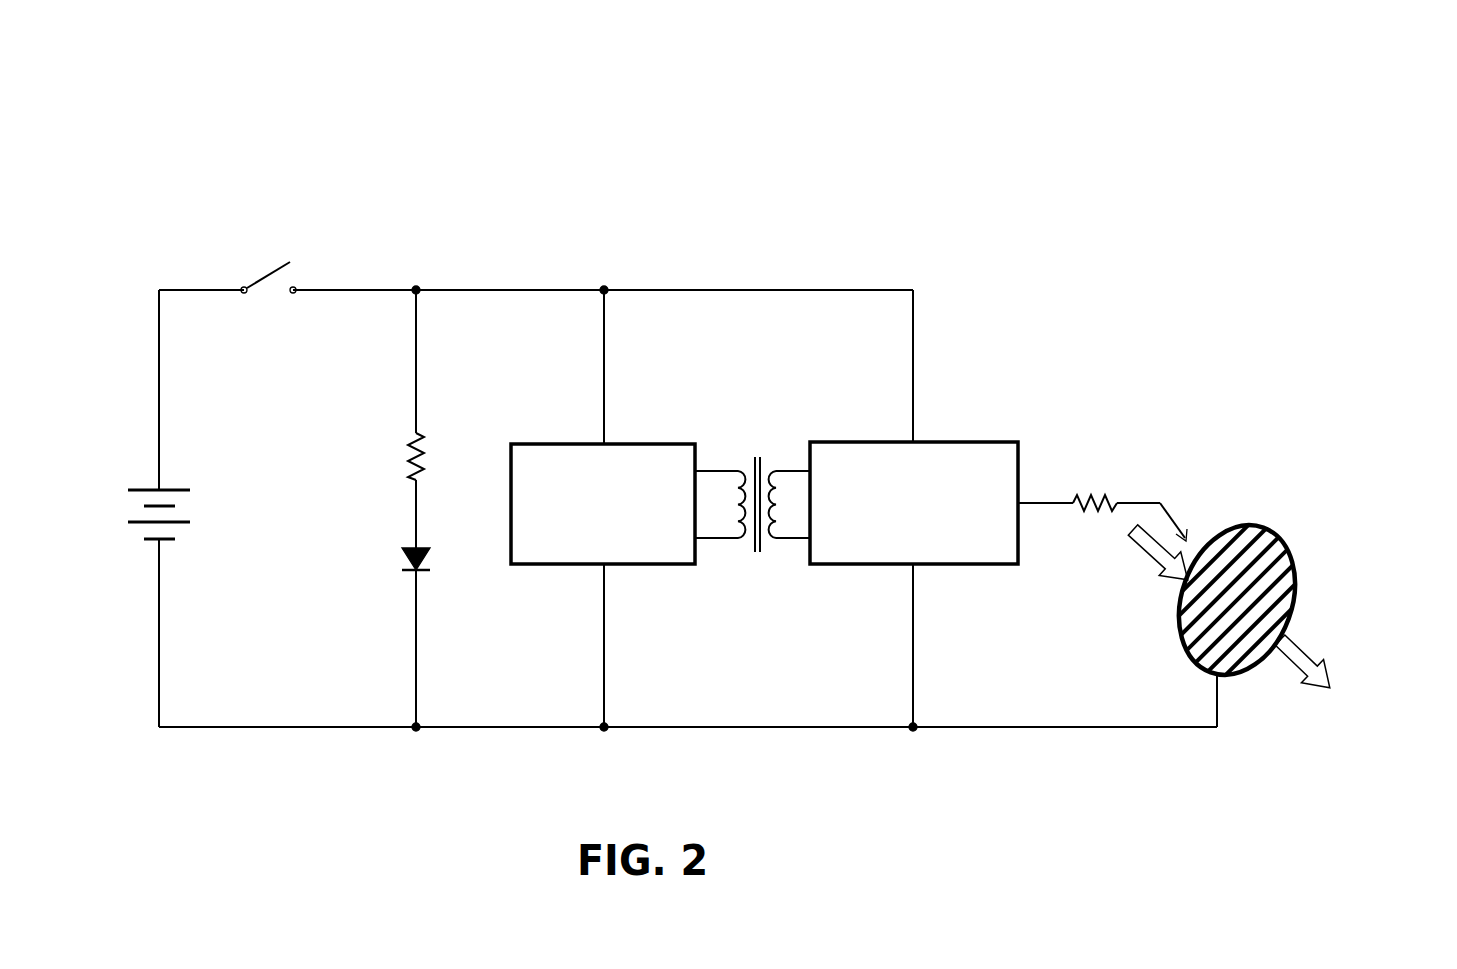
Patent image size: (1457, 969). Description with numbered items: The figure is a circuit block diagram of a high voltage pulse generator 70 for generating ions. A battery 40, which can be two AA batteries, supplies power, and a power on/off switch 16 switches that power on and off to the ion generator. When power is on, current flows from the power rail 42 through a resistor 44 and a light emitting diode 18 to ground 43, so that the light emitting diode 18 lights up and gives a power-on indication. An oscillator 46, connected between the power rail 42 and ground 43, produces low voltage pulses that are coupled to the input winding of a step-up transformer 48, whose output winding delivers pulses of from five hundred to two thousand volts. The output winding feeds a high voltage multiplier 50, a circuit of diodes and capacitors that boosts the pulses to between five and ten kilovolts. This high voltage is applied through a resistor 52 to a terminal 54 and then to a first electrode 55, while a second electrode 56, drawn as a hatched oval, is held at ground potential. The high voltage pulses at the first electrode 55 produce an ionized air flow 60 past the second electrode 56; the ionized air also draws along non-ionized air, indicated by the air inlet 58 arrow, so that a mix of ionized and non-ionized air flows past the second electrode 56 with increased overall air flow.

The power on/off switch 16 is at (293, 273).
The light emitting diode 18 is at (430, 548).
The battery 40 is at (182, 532).
The power rail 42 is at (703, 287).
The ground 43 is at (803, 732).
The resistor 44 is at (423, 453).
The oscillator 46 is at (548, 463).
The step-up transformer 48 is at (765, 465).
The high voltage multiplier 50 is at (967, 440).
The resistor 52 is at (1093, 478).
The terminal 54 is at (1140, 503).
The first electrode 55 is at (1190, 532).
The second electrode 56 is at (1262, 570).
The air inlet flow 58 is at (1087, 617).
The ionized air flow 60 is at (1355, 693).
The high voltage pulse generator 70 is at (485, 758).